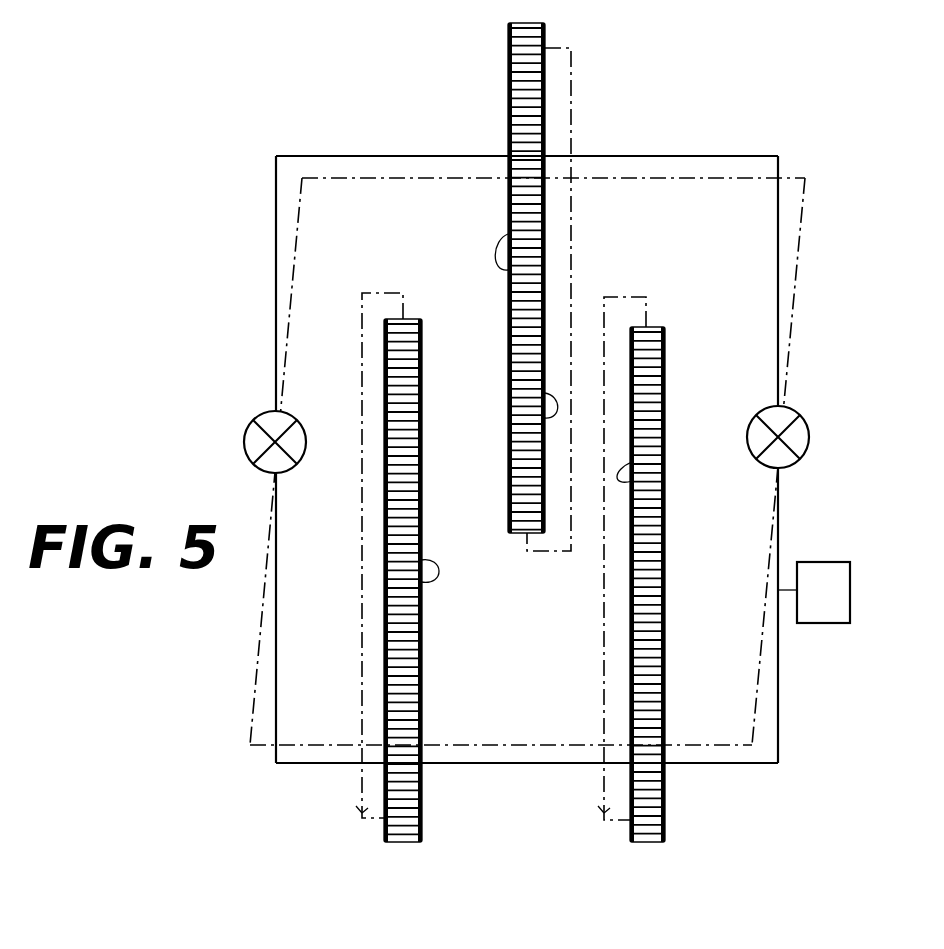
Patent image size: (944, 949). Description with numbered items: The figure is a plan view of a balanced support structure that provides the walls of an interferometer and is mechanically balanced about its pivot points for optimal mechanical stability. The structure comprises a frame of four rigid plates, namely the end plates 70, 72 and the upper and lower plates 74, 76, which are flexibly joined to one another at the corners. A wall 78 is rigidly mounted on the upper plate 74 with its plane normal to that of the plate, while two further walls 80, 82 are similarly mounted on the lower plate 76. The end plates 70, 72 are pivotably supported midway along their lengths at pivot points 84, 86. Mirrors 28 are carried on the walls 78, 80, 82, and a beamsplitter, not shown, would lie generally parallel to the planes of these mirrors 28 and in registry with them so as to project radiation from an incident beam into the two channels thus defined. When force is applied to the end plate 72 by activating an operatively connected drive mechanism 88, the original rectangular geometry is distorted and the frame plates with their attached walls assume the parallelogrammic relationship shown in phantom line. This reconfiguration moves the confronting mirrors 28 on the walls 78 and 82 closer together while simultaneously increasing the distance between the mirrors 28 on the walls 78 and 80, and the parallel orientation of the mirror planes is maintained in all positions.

The mirrors 28 is at (512, 233).
The end plate 70 is at (277, 215).
The end plate 72 is at (800, 243).
The upper plate 74 is at (421, 155).
The lower plate 76 is at (298, 746).
The wall 78 is at (508, 78).
The wall 80 is at (360, 816).
The wall 82 is at (603, 820).
The pivot point 84 is at (246, 445).
The pivot point 86 is at (810, 432).
The drive mechanism 88 is at (826, 570).